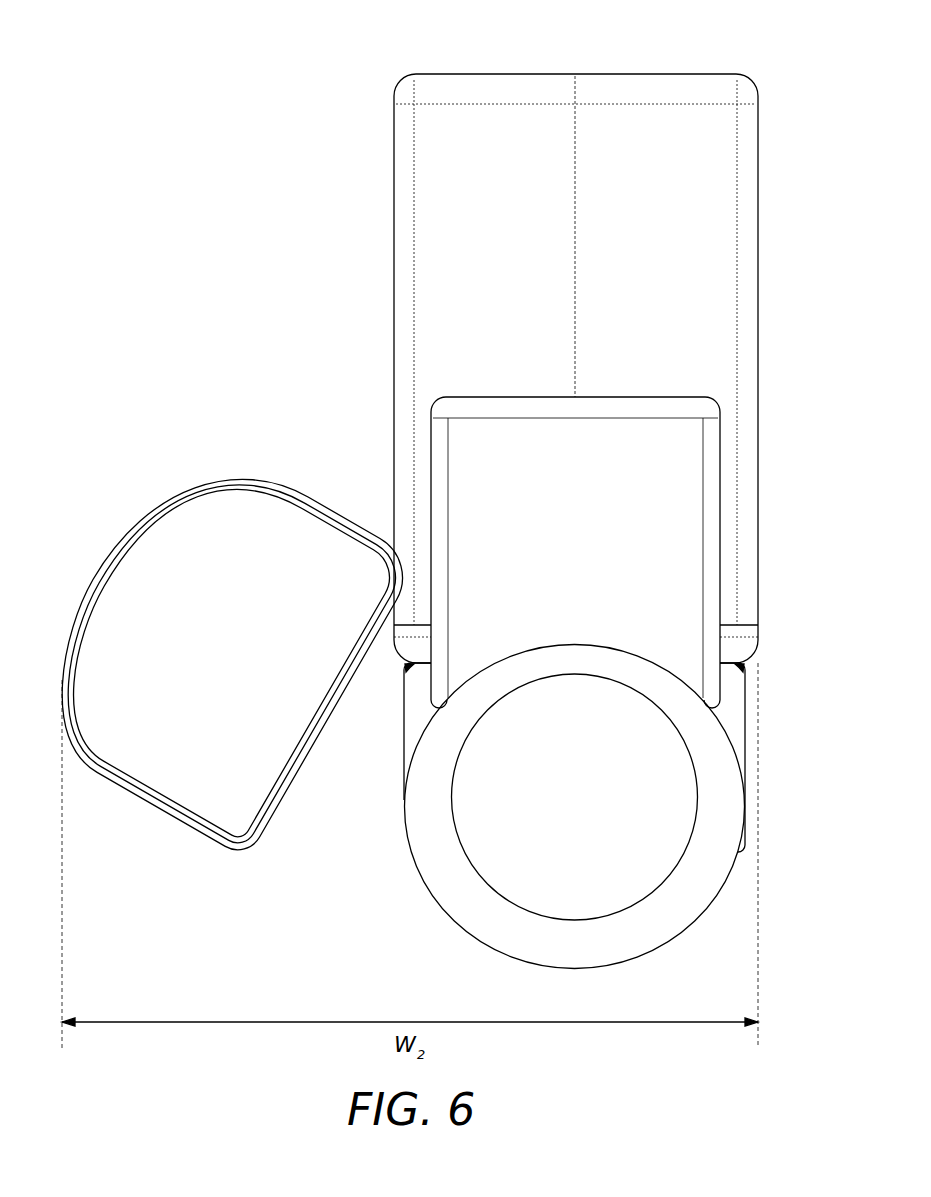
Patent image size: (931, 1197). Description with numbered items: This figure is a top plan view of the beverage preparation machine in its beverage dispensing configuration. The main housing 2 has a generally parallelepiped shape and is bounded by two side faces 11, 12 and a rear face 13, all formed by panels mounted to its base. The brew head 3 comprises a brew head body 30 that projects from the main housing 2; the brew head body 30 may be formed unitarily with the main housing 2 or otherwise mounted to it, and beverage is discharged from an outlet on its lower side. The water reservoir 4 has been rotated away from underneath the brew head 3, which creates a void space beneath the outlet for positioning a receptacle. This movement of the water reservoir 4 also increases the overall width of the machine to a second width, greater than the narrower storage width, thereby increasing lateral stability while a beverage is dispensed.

The main housing 2 is at (579, 361).
The brew head 3 is at (746, 700).
The water reservoir 4 is at (157, 496).
The side face 11 is at (758, 222).
The side face 12 is at (393, 262).
The rear face 13 is at (598, 74).
The brew head body 30 is at (637, 888).